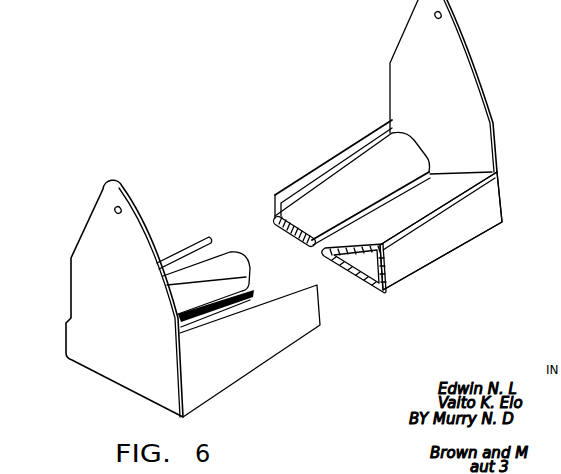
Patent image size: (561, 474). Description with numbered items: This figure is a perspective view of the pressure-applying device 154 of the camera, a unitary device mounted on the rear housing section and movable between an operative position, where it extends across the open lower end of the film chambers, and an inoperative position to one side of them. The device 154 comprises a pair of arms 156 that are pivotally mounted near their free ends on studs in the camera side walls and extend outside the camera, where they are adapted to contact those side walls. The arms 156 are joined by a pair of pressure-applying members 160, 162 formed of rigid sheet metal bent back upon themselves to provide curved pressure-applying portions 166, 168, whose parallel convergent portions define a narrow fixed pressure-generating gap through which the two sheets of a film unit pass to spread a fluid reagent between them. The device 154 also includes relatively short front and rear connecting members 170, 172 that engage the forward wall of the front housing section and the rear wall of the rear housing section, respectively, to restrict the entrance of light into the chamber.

The pressure-applying device 154 is at (318, 340).
The arms 156 is at (98, 245).
The pressure-applying member 160 is at (411, 213).
The pressure-applying member 162 is at (357, 184).
The curved pressure-applying portion 166 is at (316, 257).
The curved pressure-applying portion 168 is at (307, 246).
The front connecting member 170 is at (410, 247).
The rear connecting member 172 is at (196, 253).